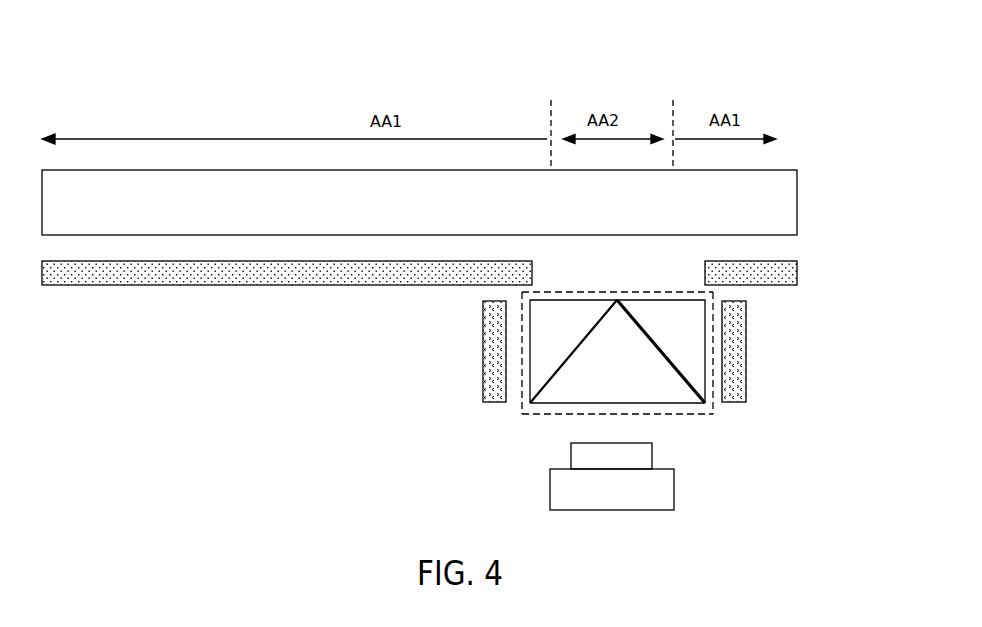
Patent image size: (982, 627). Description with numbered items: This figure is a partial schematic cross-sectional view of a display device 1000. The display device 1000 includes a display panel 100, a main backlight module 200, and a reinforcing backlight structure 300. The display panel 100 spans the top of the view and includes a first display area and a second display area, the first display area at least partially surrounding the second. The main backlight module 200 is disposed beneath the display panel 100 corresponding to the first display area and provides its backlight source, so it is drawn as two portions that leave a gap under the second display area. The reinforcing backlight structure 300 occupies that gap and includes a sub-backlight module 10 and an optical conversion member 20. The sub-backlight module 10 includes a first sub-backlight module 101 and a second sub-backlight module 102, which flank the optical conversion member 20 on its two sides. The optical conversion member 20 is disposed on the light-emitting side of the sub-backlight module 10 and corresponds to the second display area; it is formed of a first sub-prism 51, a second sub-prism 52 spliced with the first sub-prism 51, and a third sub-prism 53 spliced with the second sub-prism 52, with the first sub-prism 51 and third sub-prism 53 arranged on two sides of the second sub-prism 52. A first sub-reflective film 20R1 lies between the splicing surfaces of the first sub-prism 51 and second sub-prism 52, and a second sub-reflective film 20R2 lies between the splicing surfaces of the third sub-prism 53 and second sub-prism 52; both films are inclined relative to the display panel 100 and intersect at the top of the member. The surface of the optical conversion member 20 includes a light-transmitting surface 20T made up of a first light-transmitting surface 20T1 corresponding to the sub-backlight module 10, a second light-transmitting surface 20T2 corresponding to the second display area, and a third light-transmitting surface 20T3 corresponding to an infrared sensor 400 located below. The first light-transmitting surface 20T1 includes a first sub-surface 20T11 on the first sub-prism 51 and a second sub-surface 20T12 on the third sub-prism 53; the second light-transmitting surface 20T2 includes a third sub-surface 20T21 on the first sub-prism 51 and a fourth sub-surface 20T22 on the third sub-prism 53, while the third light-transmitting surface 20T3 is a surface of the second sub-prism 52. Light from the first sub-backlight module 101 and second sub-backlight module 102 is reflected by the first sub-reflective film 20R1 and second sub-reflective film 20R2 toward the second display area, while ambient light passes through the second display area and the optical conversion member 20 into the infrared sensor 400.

The display device 1000 is at (712, 93).
The display panel 100 is at (785, 203).
The main backlight module 200 is at (785, 275).
The reinforcing backlight structure 300 is at (239, 325).
The sub-backlight module 10 is at (251, 325).
The optical conversion member 20 is at (648, 415).
The first sub-prism 51 is at (697, 340).
The second sub-prism 52 is at (670, 393).
The third sub-prism 53 is at (547, 340).
The first sub-backlight module 101 is at (733, 319).
The second sub-backlight module 102 is at (487, 318).
The light-transmitting surface 20T is at (239, 392).
The first light-transmitting surface 20T1 is at (263, 393).
The second light-transmitting surface 20T2 is at (263, 417).
The third light-transmitting surface 20T3 is at (565, 404).
The first sub-surface 20T11 is at (707, 365).
The second sub-surface 20T12 is at (527, 365).
The third sub-surface 20T21 is at (683, 297).
The fourth sub-surface 20T22 is at (577, 299).
The first sub-reflective film 20R1 is at (697, 388).
The second sub-reflective film 20R2 is at (527, 388).
The infrared sensor 400 is at (674, 480).